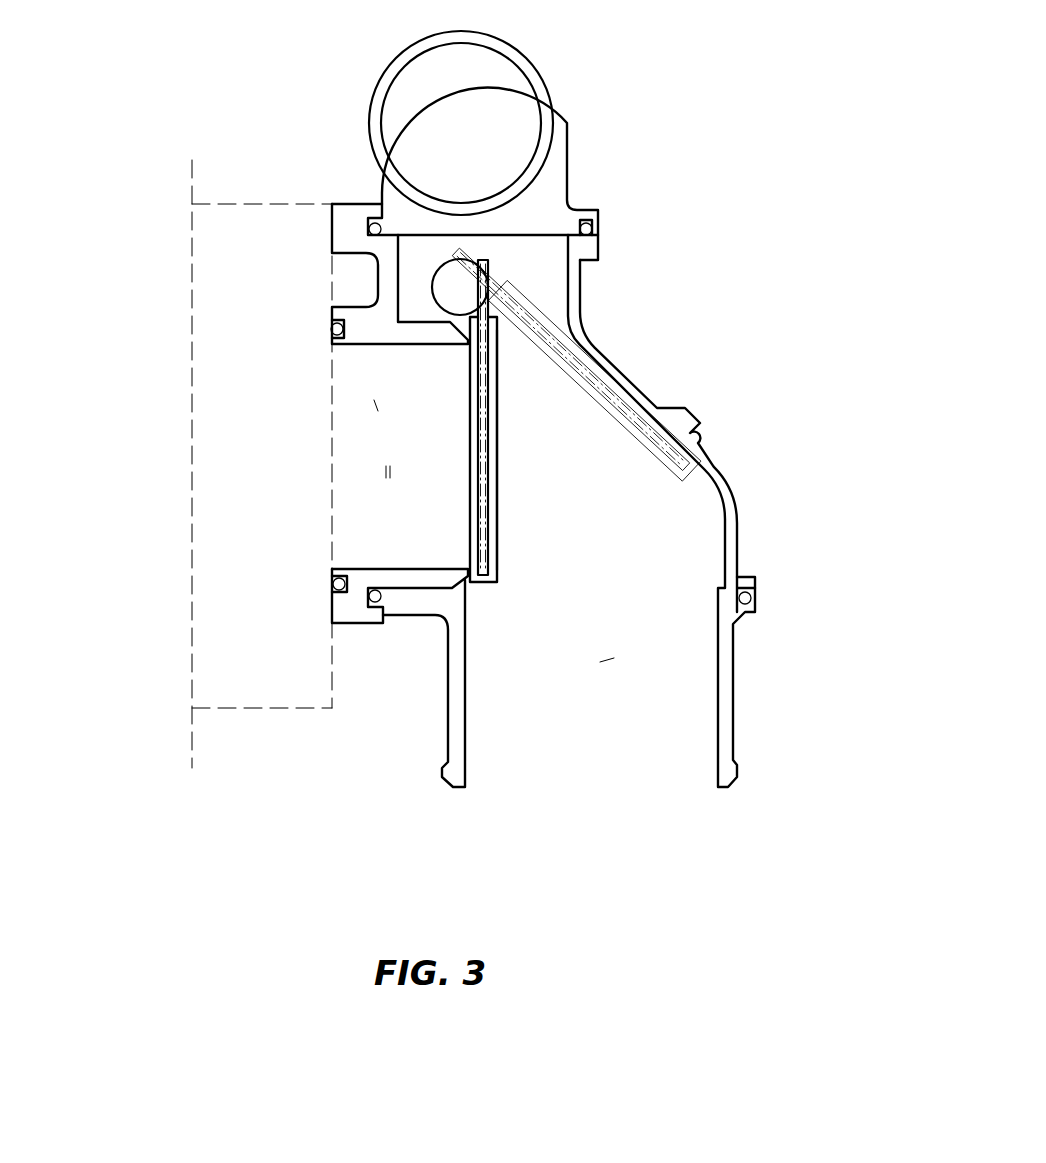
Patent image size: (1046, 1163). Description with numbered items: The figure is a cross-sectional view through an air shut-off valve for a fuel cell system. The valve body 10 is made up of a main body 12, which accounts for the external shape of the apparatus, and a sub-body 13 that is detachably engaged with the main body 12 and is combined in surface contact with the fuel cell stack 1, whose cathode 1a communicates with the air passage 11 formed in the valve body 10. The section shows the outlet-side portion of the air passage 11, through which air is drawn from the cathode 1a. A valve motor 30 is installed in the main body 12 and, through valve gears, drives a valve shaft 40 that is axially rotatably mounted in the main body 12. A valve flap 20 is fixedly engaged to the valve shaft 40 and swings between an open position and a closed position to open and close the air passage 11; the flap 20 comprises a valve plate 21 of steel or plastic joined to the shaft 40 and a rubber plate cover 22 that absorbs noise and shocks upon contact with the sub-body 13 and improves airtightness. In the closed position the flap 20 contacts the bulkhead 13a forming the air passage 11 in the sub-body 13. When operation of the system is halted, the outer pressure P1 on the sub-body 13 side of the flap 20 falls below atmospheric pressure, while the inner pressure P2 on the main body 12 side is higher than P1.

The valve body 10 is at (565, 72).
The valve motor 30 is at (532, 128).
The main body 12 is at (553, 180).
The sub-body 13 is at (352, 208).
The bulkhead 13a is at (412, 578).
The valve shaft 40 is at (462, 287).
The valve flap 20 is at (598, 377).
The valve plate 21 is at (483, 552).
The plate cover 22 is at (497, 498).
The fuel cell stack 1 is at (260, 203).
The cathode 1a is at (256, 702).
The air passage 11 is at (390, 472).
The outer pressure P1 is at (376, 408).
The inner pressure P2 is at (607, 660).